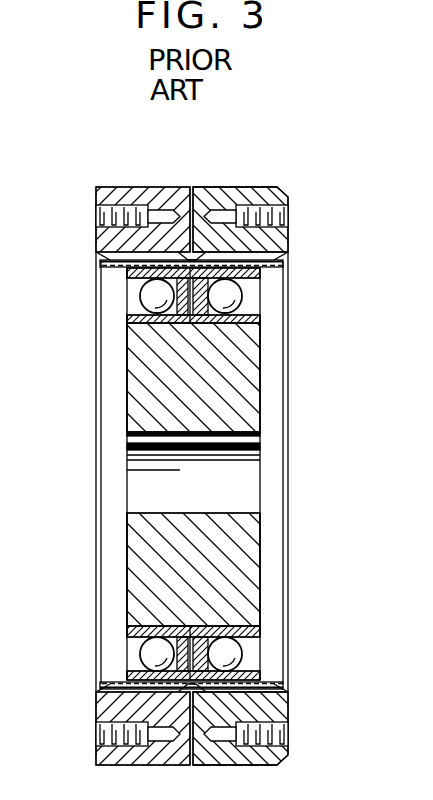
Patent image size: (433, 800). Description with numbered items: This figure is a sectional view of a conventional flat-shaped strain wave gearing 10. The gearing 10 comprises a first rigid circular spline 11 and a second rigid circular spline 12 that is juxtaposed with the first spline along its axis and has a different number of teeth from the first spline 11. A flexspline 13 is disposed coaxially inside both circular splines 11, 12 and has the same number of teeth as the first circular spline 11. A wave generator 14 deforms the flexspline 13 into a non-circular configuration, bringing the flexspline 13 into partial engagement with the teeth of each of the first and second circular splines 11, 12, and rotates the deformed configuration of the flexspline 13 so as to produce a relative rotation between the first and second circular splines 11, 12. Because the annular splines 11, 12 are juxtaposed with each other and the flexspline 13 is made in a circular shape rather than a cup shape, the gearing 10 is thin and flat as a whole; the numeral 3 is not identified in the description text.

The strain wave gearing 10 is at (289, 186).
The housing 3 is at (287, 760).
The first rigid circular spline 11 is at (103, 242).
The second rigid circular spline 12 is at (280, 237).
The flexspline 13 is at (284, 259).
The wave generator 14 is at (207, 389).